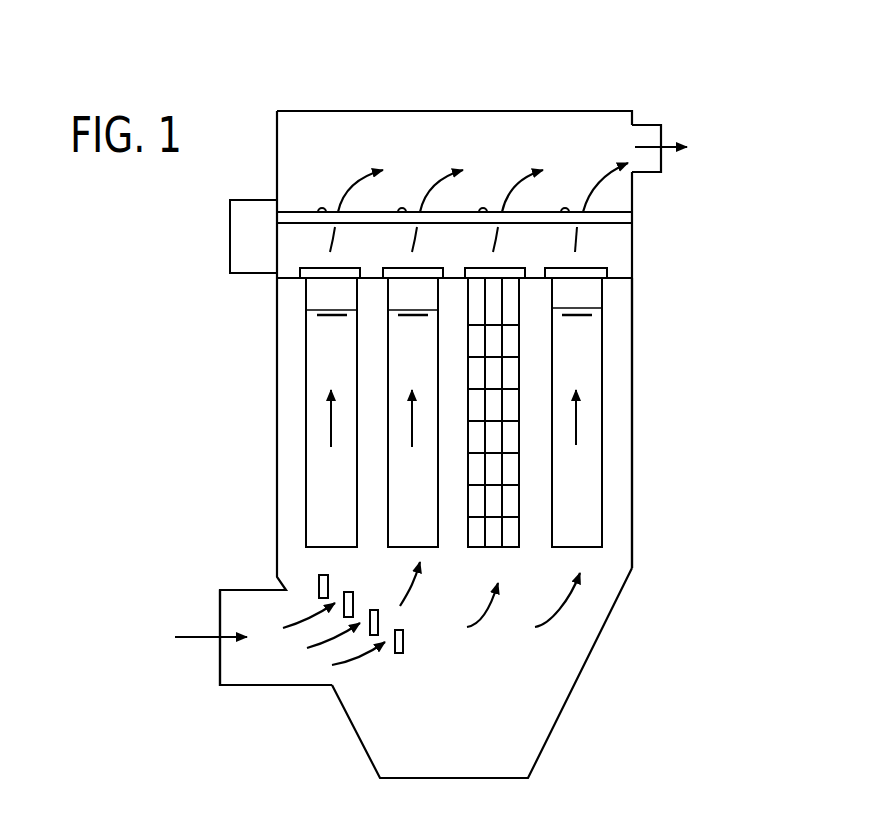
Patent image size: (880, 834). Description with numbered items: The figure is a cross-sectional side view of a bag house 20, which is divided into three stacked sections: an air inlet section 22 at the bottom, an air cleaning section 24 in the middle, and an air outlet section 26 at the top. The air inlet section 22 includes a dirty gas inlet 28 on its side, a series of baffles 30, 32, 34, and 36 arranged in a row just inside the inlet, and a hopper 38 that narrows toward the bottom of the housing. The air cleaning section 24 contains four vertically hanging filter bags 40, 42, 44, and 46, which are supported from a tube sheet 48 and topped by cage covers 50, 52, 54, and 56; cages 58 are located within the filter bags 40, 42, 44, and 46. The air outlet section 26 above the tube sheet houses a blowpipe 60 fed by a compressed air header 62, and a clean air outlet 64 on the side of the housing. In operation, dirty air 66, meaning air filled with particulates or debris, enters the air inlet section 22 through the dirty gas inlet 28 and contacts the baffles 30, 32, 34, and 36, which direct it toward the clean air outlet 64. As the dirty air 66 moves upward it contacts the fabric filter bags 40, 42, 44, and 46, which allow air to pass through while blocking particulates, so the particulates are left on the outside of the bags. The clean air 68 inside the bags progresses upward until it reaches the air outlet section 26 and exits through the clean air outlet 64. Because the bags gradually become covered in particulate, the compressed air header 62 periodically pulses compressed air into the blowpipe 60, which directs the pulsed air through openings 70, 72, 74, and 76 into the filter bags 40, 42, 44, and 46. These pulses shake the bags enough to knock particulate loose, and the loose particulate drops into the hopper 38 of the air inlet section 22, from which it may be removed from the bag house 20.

The bag house 20 is at (213, 765).
The air inlet section 22 is at (640, 670).
The air cleaning section 24 is at (677, 348).
The air outlet section 26 is at (563, 82).
The dirty gas inlet 28 is at (238, 666).
The baffle 30 is at (398, 655).
The baffle 32 is at (378, 612).
The baffle 34 is at (350, 593).
The baffle 36 is at (318, 578).
The hopper 38 is at (497, 742).
The filter bag 40 is at (330, 468).
The filter bag 42 is at (405, 368).
The filter bag 44 is at (512, 548).
The filter bag 46 is at (578, 478).
The tube sheet 48 is at (285, 280).
The cage cover 50 is at (330, 272).
The cage cover 52 is at (412, 272).
The cage cover 54 is at (493, 272).
The cage cover 56 is at (597, 272).
The cage 58 is at (507, 503).
The blowpipe 60 is at (465, 212).
The compressed air header 62 is at (240, 236).
The clean air outlet 64 is at (650, 125).
The dirty air 66 is at (203, 633).
The clean air 68 is at (412, 427).
The opening 70 is at (322, 210).
The opening 72 is at (402, 210).
The opening 74 is at (488, 210).
The opening 76 is at (566, 210).